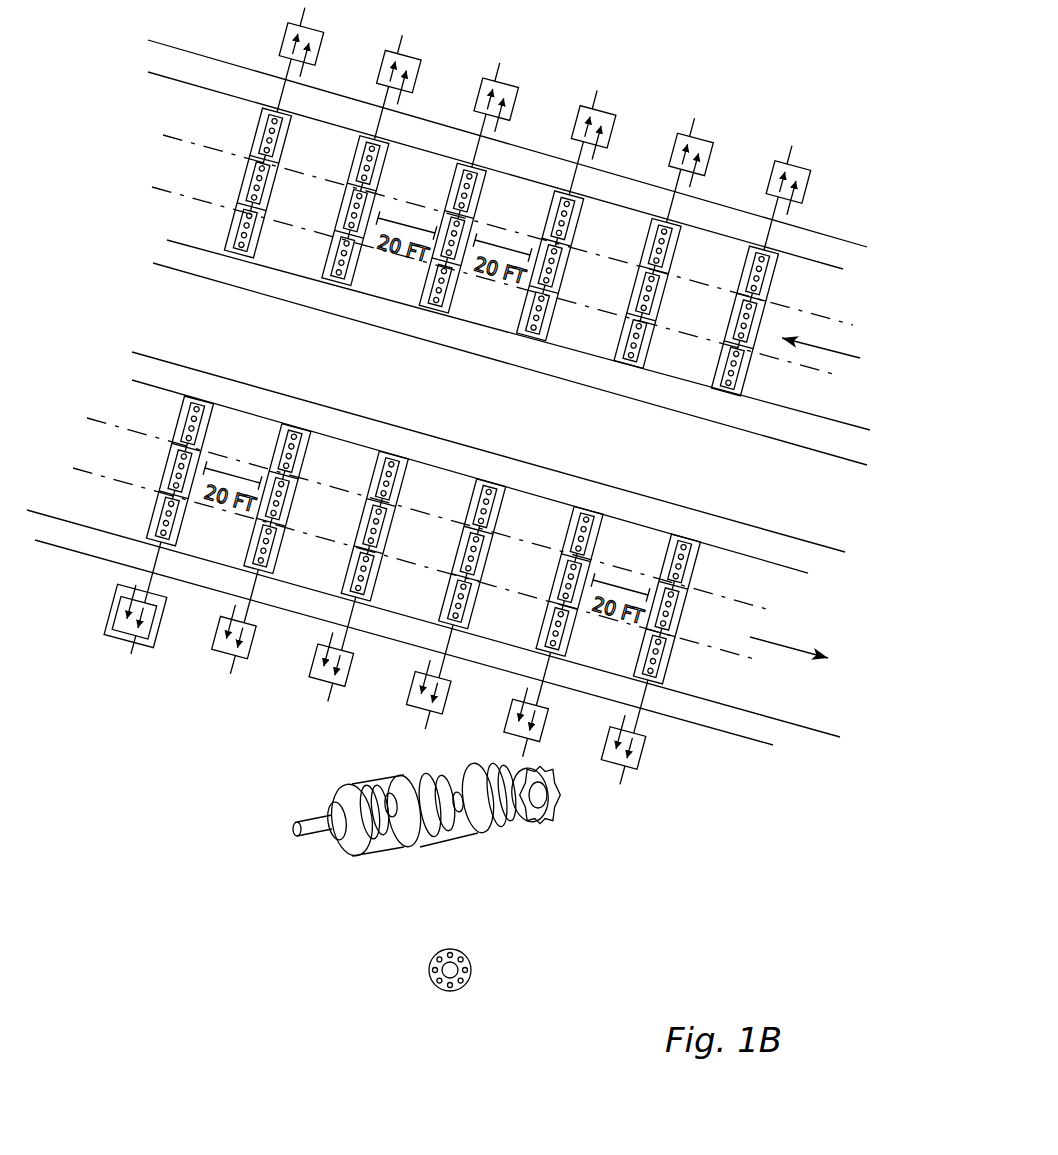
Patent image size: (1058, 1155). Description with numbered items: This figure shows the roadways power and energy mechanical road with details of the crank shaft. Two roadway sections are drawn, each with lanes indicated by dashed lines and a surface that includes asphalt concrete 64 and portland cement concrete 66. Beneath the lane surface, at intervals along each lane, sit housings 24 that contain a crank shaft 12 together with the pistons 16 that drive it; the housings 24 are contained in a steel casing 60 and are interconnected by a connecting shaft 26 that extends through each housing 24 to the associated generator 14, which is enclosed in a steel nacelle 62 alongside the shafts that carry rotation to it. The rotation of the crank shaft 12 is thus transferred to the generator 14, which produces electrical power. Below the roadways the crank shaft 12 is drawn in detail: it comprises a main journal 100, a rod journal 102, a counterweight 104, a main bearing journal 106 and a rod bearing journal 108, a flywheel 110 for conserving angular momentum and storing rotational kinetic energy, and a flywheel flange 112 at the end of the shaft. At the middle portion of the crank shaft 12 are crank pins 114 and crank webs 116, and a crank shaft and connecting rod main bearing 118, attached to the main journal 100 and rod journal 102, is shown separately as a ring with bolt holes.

The crank shaft 12 is at (317, 840).
The generator 14 is at (698, 132).
The piston 16 is at (723, 397).
The housing 24 is at (623, 368).
The connecting shaft 26 is at (478, 153).
The steel casing 60 is at (521, 324).
The steel nacelle 62 is at (122, 607).
The asphalt concrete 64 is at (690, 246).
The portland cement concrete 66 is at (293, 577).
The main journal 100 is at (427, 850).
The rod journal 102 is at (370, 850).
The counterweight 104 is at (488, 832).
The main bearing journal 106 is at (387, 852).
The rod bearing journal 108 is at (483, 828).
The flywheel 110 is at (525, 828).
The flywheel flange 112 is at (550, 815).
The crank pins 114 is at (403, 852).
The crank webs 116 is at (393, 778).
The crank shaft and connecting rod main bearings 118 is at (427, 973).